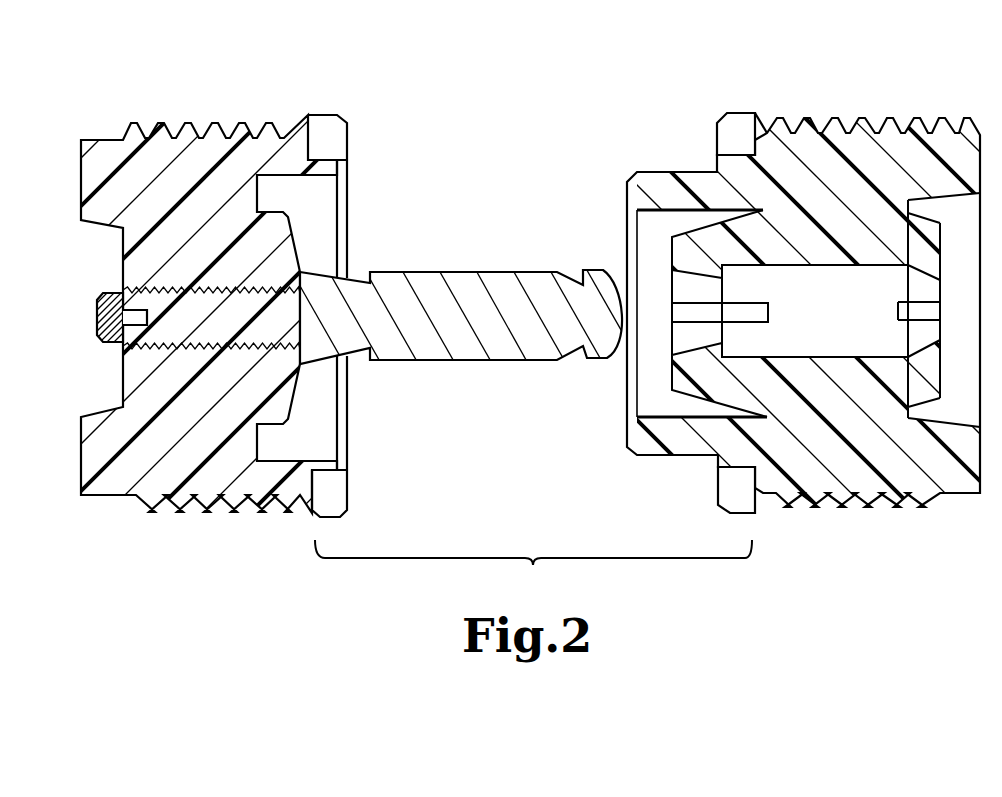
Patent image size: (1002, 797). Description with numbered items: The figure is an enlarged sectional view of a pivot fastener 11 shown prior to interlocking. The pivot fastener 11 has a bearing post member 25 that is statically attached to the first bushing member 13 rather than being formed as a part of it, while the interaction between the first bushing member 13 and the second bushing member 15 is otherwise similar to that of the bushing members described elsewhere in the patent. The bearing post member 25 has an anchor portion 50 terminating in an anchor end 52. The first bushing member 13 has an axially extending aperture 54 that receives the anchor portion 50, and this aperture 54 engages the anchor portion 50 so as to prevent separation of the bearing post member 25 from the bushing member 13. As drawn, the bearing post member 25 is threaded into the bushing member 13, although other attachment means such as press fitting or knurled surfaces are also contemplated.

The pivot fastener 11 is at (456, 134).
The first bushing member 13 is at (199, 118).
The second bushing member 15 is at (855, 118).
The bearing post member 25 is at (424, 282).
The anchor portion 50 is at (148, 289).
The anchor end 52 is at (97, 298).
The axially extending aperture 54 is at (208, 349).